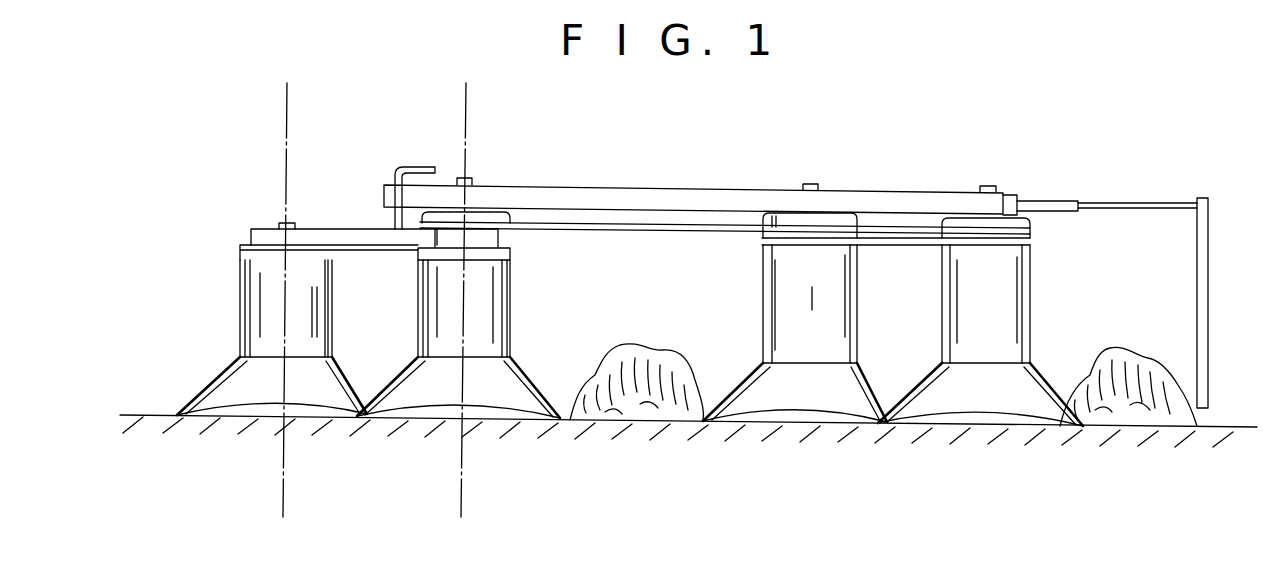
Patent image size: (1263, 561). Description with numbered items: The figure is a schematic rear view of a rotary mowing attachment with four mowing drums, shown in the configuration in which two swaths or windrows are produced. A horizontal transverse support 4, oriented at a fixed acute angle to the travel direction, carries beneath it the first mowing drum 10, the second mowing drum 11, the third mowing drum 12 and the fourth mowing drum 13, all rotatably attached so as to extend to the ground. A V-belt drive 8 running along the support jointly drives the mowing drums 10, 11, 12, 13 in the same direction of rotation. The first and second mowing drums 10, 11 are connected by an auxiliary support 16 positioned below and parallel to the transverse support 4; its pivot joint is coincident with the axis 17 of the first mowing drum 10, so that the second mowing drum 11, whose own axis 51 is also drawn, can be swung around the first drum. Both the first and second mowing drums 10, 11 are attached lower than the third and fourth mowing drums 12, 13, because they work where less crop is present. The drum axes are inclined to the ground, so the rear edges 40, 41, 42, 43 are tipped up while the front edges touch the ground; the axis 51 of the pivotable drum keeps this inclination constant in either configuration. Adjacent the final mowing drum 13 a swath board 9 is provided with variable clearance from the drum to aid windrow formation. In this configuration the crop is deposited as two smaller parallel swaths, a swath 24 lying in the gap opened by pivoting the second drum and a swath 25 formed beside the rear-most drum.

The transverse support 4 is at (636, 190).
The V-belt drive 8 is at (640, 230).
The swath board 9 is at (1192, 274).
The first mowing drum 10 is at (500, 402).
The second mowing drum 11 is at (305, 383).
The third mowing drum 12 is at (827, 388).
The fourth mowing drum 13 is at (998, 390).
The auxiliary support 16 is at (345, 240).
The axis of the first mowing drum 17 is at (472, 182).
The second swath 24 is at (620, 410).
The swath 25 is at (1137, 417).
The rear edge of first mowing drum 40 is at (233, 412).
The rear edge of second mowing drum 41 is at (410, 408).
The rear edge of third mowing drum 42 is at (788, 405).
The rear edge of fourth mowing drum 43 is at (960, 408).
The axis of the pivotable mowing drum 51 is at (287, 136).